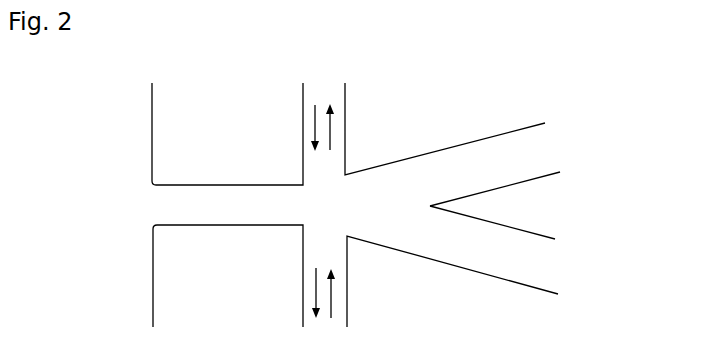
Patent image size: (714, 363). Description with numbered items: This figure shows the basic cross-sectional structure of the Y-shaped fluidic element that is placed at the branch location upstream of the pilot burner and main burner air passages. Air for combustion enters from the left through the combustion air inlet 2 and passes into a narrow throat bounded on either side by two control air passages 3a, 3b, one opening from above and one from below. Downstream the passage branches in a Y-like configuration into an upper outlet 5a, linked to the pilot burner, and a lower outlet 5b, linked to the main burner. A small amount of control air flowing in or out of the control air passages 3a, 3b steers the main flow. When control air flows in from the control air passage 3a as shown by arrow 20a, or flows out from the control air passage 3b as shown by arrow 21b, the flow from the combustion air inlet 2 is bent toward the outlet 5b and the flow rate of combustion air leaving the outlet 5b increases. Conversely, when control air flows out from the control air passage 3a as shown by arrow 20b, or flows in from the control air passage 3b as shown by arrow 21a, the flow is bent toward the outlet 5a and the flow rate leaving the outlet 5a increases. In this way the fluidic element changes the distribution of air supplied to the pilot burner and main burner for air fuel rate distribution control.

The combustion air inlet 2 is at (173, 208).
The control air passage 3a is at (322, 170).
The control air passage 3b is at (322, 248).
The outlet 5a is at (540, 147).
The outlet 5b is at (553, 266).
The arrow 20a is at (310, 124).
The arrow 20b is at (338, 130).
The arrow 21a is at (335, 298).
The arrow 21b is at (302, 299).